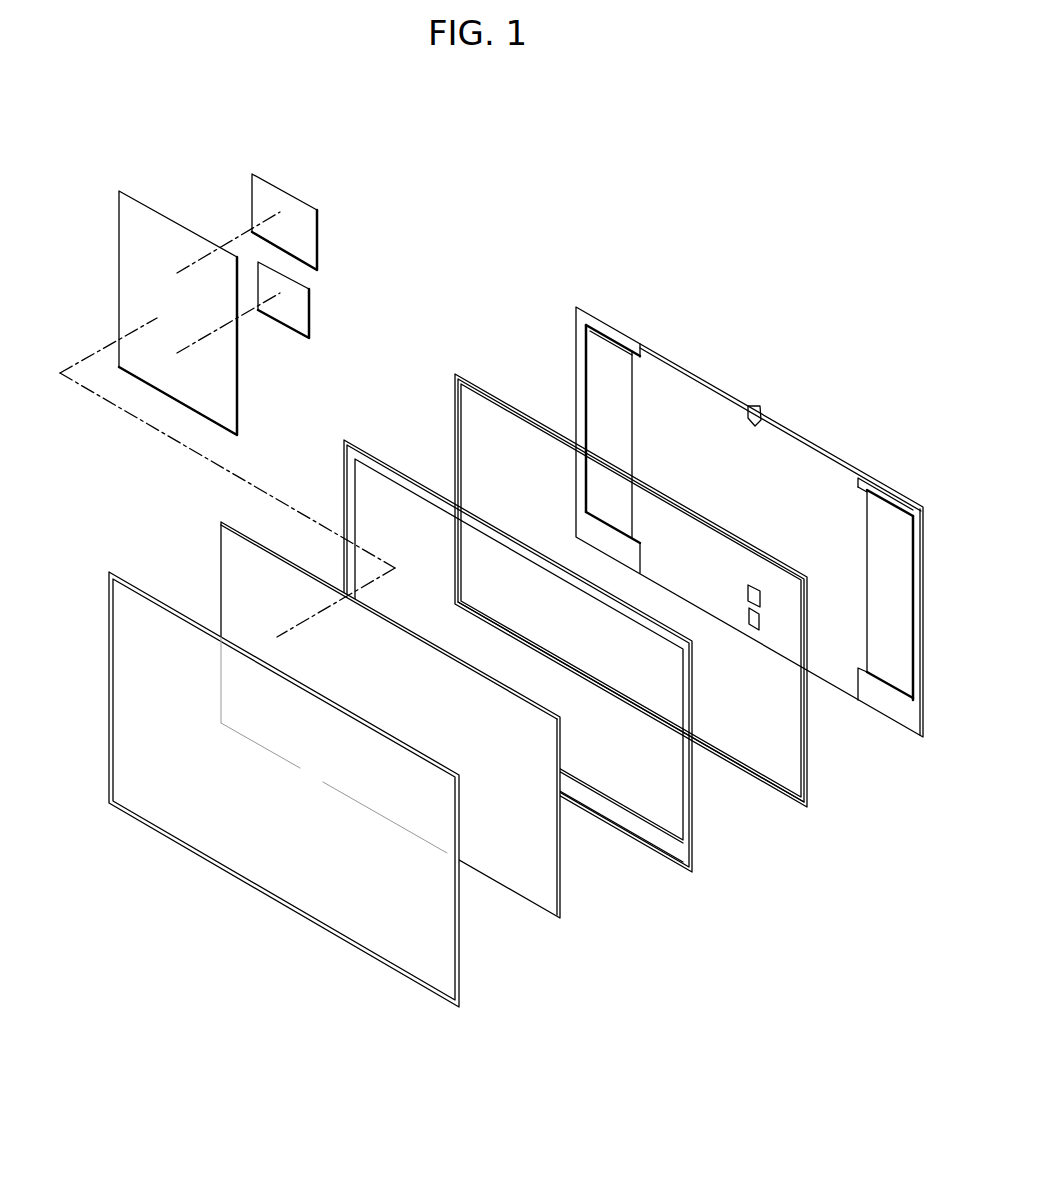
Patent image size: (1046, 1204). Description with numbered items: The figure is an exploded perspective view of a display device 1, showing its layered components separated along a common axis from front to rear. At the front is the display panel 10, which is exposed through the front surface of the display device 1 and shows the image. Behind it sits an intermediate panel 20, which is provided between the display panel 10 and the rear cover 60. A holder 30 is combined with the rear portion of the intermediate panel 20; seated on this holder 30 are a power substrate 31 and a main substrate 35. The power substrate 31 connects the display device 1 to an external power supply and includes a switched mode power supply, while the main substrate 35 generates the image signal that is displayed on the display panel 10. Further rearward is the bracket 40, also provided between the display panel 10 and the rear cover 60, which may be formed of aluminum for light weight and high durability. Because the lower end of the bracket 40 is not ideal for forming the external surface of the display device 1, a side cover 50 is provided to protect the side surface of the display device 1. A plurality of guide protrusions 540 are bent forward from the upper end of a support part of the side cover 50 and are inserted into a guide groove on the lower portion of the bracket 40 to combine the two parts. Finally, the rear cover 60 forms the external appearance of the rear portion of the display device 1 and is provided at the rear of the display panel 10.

The display device 1 is at (582, 187).
The display panel 10 is at (430, 963).
The intermediate panel 20 is at (545, 895).
The holder 30 is at (162, 228).
The power substrate 31 is at (256, 200).
The main substrate 35 is at (305, 300).
The bracket 40 is at (692, 882).
The side cover 50 is at (801, 820).
The guide protrusions 540 is at (742, 773).
The rear cover 60 is at (896, 742).